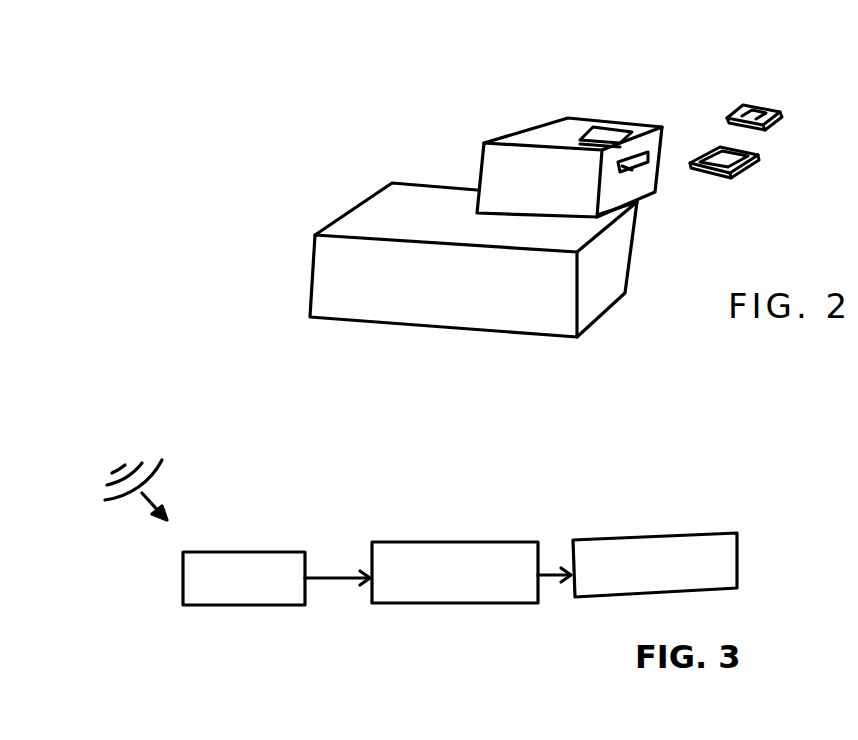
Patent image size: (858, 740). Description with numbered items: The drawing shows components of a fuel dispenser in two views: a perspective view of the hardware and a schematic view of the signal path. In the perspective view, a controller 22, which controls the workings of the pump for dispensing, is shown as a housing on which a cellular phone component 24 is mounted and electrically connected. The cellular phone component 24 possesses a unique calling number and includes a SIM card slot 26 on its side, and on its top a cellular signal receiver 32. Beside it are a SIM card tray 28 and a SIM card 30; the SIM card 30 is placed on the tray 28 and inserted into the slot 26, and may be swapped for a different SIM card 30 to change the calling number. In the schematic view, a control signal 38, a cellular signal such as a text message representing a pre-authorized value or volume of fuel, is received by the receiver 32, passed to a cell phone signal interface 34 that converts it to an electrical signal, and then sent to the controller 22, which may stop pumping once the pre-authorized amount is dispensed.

In FIG. 2, the controller 22 is at (405, 310).
In FIG. 3, the controller 22 is at (647, 558).
In FIG. 2, the cellular phone component 24 is at (547, 133).
In FIG. 2, the SIM card slot 26 is at (627, 168).
In FIG. 2, the SIM card tray 28 is at (723, 172).
In FIG. 2, the SIM card 30 is at (750, 107).
In FIG. 2, the cellular signal receiver 32 is at (603, 132).
In FIG. 3, the cellular signal receiver 32 is at (243, 575).
In FIG. 3, the cell phone signal interface 34 is at (452, 570).
In FIG. 3, the control signal 38 is at (105, 458).